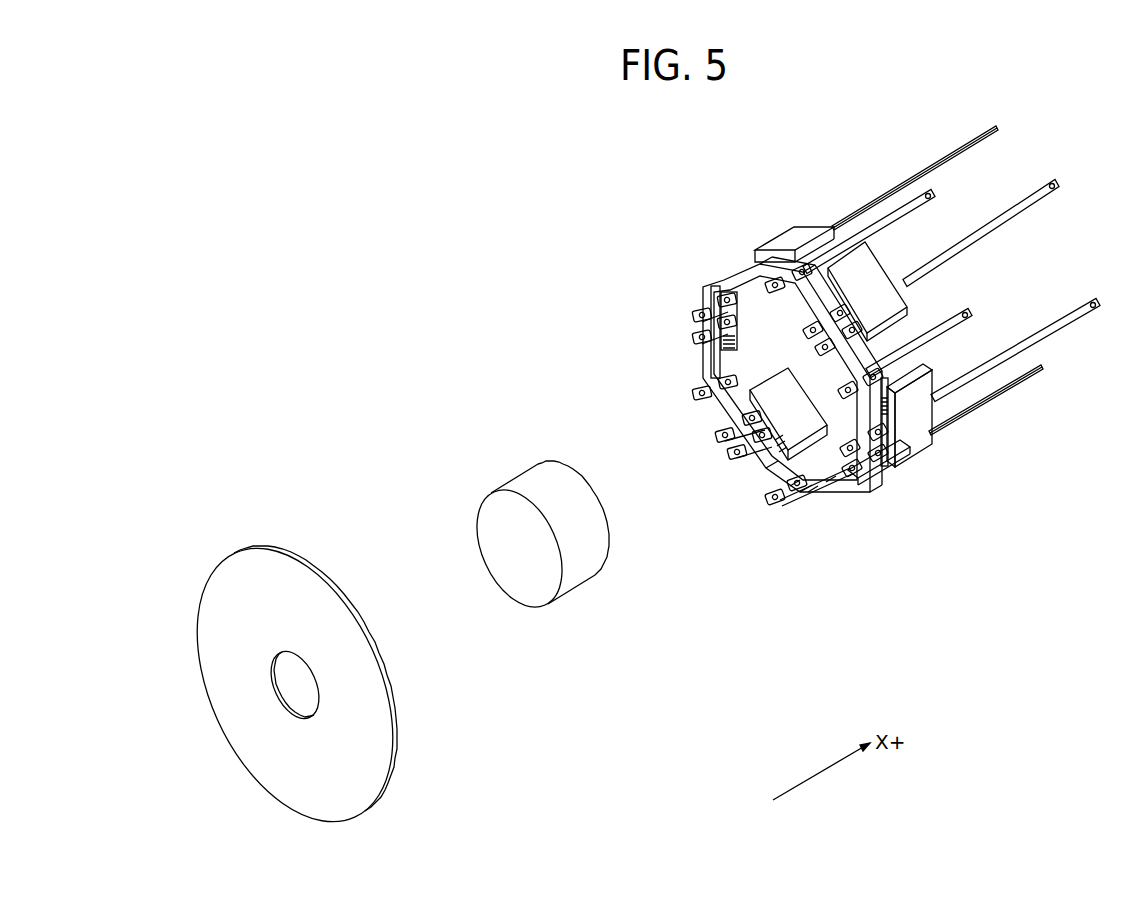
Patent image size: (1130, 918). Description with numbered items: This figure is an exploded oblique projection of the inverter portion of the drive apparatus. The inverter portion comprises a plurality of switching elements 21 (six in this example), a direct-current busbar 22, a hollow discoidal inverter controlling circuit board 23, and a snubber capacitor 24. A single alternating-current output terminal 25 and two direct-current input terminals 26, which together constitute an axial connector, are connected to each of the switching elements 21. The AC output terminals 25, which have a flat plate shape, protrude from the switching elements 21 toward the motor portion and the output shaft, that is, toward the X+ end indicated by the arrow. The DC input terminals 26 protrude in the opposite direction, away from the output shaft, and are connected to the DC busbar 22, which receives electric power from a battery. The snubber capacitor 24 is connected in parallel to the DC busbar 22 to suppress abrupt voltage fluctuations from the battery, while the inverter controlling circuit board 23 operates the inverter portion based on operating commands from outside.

The switching element 21 is at (920, 418).
The direct-current busbar 22 is at (765, 467).
The inverter controlling circuit board 23 is at (243, 577).
The snubber capacitor 24 is at (555, 479).
The alternating-current output terminal 25 is at (942, 172).
The direct-current input terminal 26 is at (883, 465).